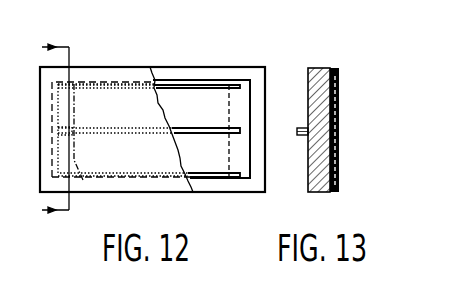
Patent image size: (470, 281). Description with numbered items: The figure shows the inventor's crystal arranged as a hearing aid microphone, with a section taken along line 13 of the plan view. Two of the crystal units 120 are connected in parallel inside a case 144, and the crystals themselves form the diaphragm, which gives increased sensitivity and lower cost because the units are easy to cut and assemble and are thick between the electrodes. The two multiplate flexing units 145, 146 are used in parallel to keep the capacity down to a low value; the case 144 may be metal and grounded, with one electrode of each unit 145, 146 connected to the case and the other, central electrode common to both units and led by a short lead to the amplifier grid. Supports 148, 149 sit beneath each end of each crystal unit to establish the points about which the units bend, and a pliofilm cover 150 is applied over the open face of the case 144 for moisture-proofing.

In FIG. 12, the section line 13 is at (39, 130).
In FIG. 12, the unit 120 is at (252, 100).
In FIG. 12, the case 144 is at (150, 69).
In FIG. 13, the case 144 is at (320, 67).
In FIG. 12, the multiplate flexing unit 145 is at (222, 86).
In FIG. 13, the multiplate flexing unit 145 is at (334, 108).
In FIG. 12, the multiplate flexing unit 146 is at (132, 178).
In FIG. 13, the multiplate flexing unit 146 is at (334, 157).
In FIG. 12, the support 148 is at (83, 182).
In FIG. 13, the support 148 is at (334, 185).
In FIG. 12, the support 149 is at (229, 143).
In FIG. 12, the pliofilm cover 150 is at (45, 141).
In FIG. 13, the pliofilm cover 150 is at (335, 73).